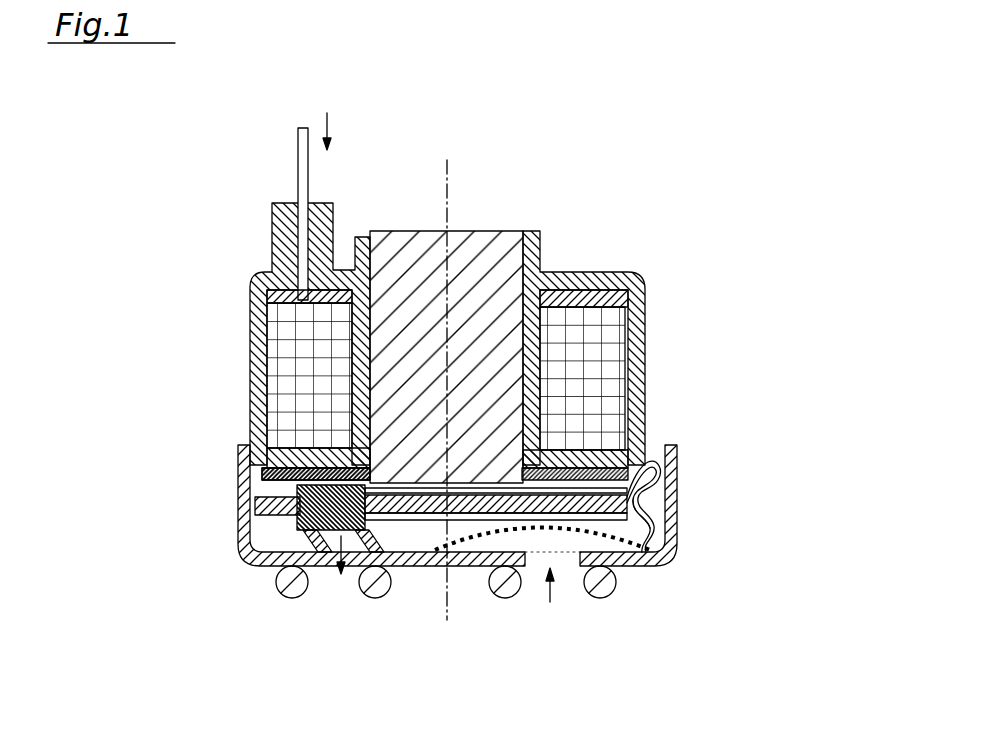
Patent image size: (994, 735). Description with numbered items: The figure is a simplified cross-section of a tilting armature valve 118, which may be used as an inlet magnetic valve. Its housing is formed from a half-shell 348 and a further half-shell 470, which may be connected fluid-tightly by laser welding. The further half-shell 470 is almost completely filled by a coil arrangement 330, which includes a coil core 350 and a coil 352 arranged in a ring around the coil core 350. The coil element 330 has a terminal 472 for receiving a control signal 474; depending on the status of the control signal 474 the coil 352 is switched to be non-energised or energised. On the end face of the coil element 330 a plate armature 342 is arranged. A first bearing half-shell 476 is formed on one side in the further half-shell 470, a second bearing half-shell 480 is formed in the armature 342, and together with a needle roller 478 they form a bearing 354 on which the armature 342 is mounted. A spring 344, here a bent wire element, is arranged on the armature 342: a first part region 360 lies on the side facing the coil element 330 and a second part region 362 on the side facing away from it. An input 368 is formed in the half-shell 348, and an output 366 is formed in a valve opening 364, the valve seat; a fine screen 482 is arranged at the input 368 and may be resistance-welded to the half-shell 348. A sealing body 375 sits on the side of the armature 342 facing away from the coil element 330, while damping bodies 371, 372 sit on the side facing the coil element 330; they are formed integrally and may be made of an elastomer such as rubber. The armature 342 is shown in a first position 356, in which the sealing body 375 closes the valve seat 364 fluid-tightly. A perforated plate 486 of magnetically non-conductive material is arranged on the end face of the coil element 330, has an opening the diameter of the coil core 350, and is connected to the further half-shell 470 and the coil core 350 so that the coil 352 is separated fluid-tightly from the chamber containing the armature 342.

The tilting armature valve 118 is at (658, 193).
The coil arrangement 330 is at (680, 340).
The plate armature 342 is at (407, 518).
The spring 344 is at (603, 518).
The half-shell 348 is at (678, 453).
The coil core 350 is at (471, 230).
The coil 352 is at (608, 380).
The bearing 354 is at (542, 538).
The first position 356 is at (195, 512).
The first part region 360 is at (468, 526).
The second part region 362 is at (505, 600).
The valve opening 364 is at (305, 574).
The output 366 is at (349, 582).
The input 368 is at (572, 596).
The damping body 371 is at (262, 497).
The damping body 372 is at (198, 457).
The sealing body 375 is at (262, 533).
The further half-shell 470 is at (646, 312).
The terminal 472 is at (298, 164).
The control signal 474 is at (330, 118).
The first bearing half-shell 476 is at (652, 458).
The needle roller 478 is at (662, 470).
The second bearing half-shell 480 is at (662, 512).
The fine screen 482 is at (455, 594).
The perforated plate 486 is at (262, 459).